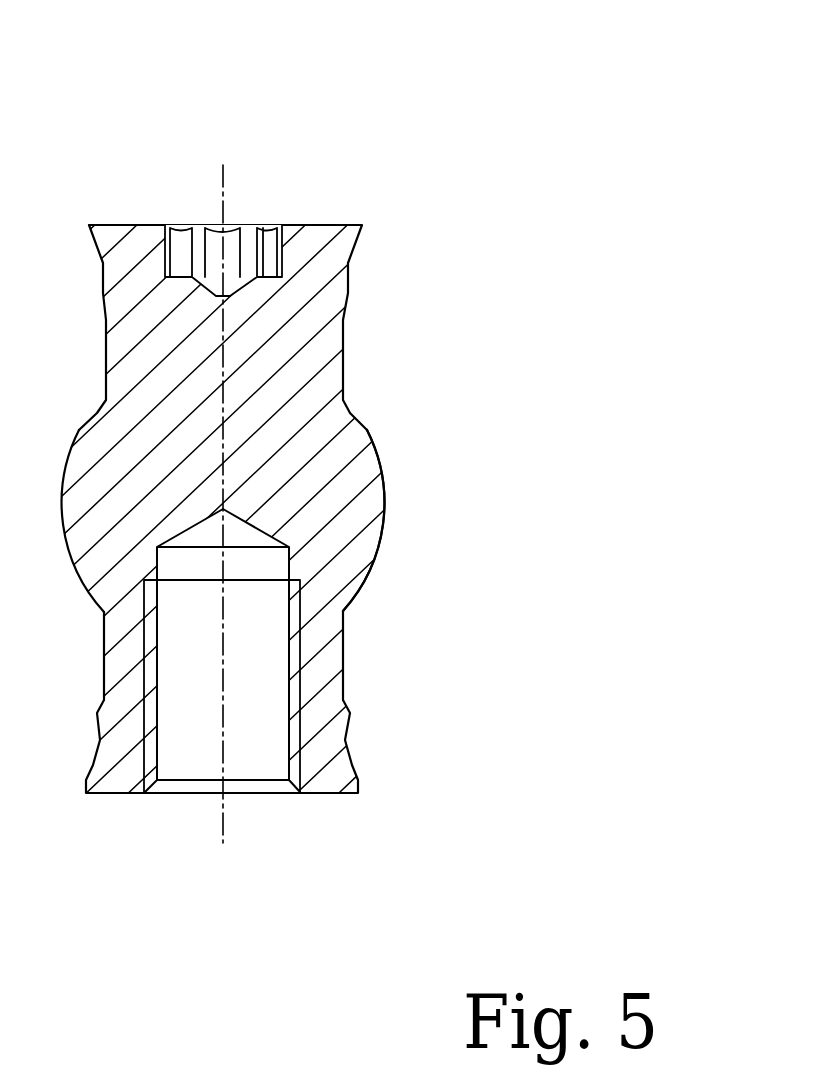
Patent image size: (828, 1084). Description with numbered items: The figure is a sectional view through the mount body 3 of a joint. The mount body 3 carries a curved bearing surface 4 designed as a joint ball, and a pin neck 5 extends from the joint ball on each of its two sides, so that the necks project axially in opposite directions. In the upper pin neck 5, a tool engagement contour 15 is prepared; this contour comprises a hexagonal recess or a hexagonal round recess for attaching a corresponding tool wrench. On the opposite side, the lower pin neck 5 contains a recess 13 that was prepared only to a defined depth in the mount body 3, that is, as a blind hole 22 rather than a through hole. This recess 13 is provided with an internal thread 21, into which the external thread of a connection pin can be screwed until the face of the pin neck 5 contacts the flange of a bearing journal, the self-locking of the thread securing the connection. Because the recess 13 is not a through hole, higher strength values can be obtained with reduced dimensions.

The mount body 3 is at (288, 412).
The curved bearing surface 4 is at (385, 493).
The pin neck 5 is at (318, 302).
The recess 13 is at (180, 840).
The tool engagement contour 15 is at (252, 205).
The internal thread 21 is at (293, 693).
The blind hole 22 is at (273, 563).